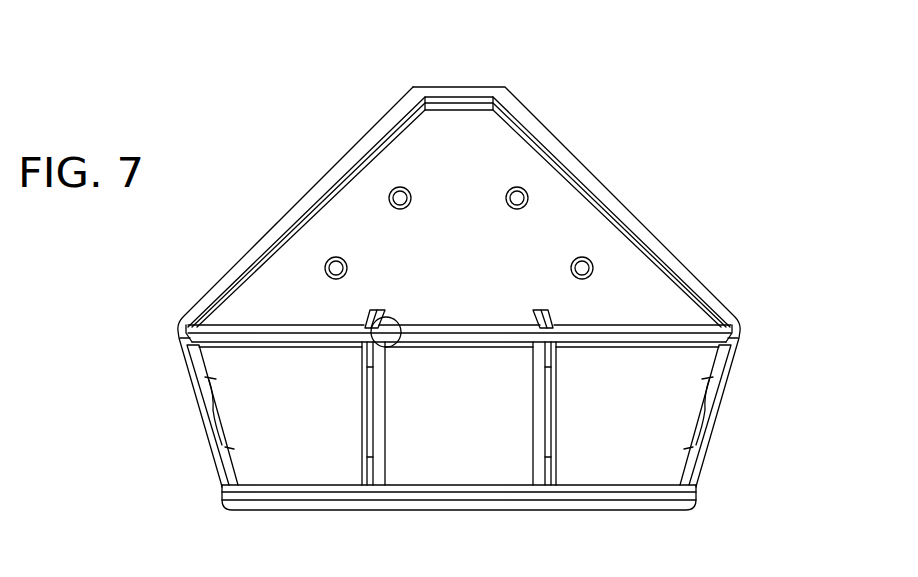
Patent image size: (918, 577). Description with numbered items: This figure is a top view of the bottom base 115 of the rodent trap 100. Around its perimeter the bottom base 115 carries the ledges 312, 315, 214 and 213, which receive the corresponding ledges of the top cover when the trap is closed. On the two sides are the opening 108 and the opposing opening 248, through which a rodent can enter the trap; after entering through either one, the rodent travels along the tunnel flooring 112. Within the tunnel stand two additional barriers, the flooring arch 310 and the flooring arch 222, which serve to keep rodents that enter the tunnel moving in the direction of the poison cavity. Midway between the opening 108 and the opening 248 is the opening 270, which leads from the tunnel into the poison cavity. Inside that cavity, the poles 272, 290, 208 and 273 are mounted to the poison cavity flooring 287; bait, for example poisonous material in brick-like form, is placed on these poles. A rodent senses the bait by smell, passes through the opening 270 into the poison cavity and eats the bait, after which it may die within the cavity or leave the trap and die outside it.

The rodent trap 100 is at (587, 64).
The bottom base 115 is at (647, 152).
The ledge 315 is at (458, 87).
The ledge 312 is at (285, 217).
The ledge 214 is at (632, 217).
The pole 290 is at (408, 201).
The pole 208 is at (508, 201).
The pole 272 is at (348, 268).
The pole 273 is at (570, 268).
The poison cavity flooring 287 is at (479, 301).
The opening 270 is at (375, 343).
The flooring arch 310 is at (382, 412).
The flooring arch 222 is at (549, 410).
The tunnel flooring 112 is at (642, 459).
The opening 248 is at (208, 415).
The opening 108 is at (712, 413).
The ledge 213 is at (460, 502).